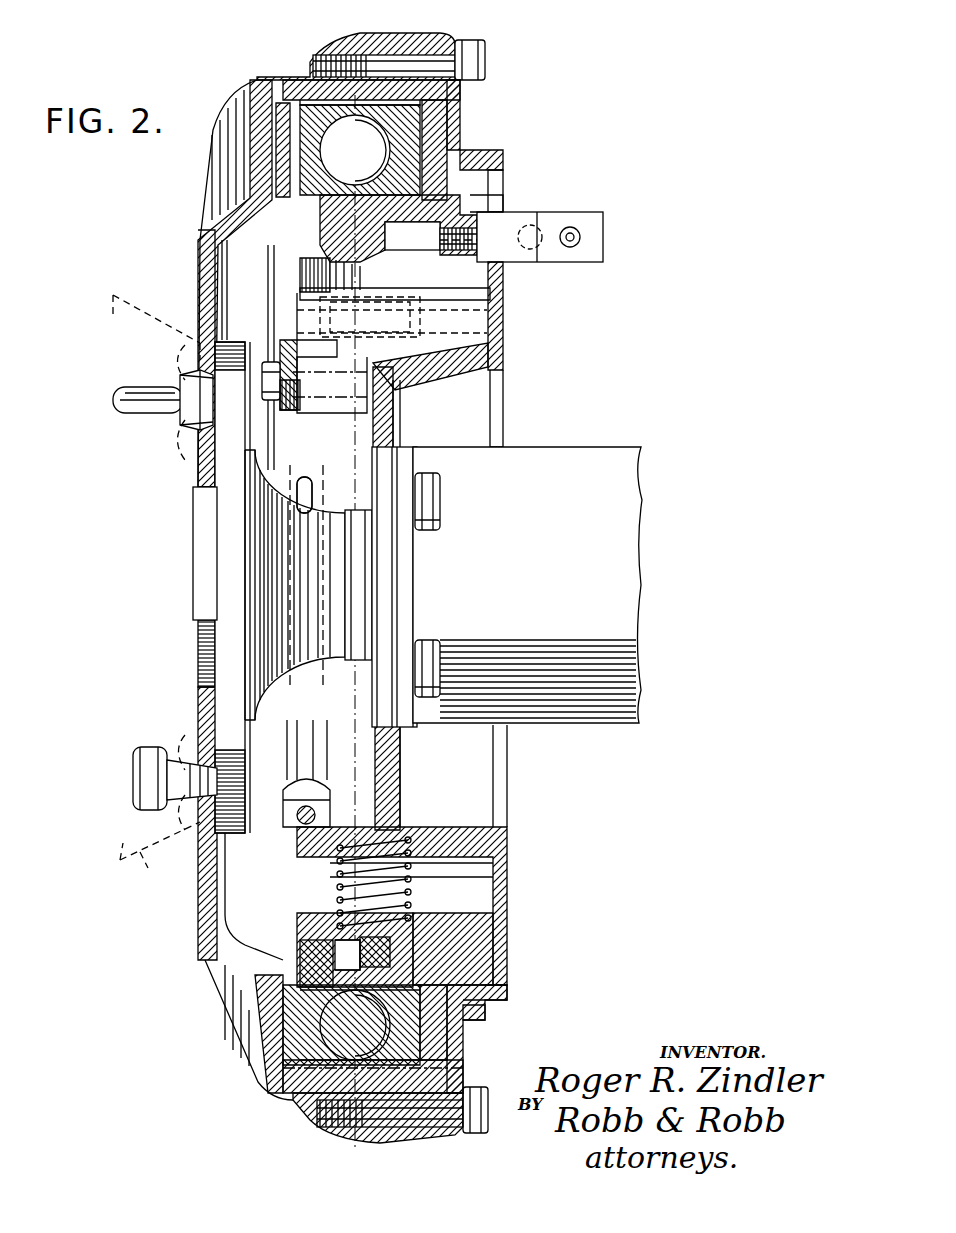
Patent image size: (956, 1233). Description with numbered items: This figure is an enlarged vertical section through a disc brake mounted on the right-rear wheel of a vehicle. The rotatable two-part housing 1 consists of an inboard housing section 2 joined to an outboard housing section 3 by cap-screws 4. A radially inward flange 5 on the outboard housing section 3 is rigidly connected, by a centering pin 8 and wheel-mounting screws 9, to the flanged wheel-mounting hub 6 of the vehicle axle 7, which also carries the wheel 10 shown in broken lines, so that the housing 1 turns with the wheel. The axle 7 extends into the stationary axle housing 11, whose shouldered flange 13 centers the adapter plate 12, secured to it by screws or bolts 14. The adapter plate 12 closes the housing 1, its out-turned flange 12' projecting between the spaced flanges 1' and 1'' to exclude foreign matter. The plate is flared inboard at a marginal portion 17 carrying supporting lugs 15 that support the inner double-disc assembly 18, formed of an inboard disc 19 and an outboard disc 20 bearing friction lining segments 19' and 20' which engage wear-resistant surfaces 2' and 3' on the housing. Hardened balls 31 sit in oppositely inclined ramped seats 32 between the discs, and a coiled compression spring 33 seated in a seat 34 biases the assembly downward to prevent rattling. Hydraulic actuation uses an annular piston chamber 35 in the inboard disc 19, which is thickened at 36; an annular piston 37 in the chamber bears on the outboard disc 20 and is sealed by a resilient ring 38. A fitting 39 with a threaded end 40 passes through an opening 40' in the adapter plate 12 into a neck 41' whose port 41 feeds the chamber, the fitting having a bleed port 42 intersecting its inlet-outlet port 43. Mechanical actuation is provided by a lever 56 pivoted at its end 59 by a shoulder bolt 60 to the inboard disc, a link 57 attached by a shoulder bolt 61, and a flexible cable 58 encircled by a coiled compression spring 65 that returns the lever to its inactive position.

The two-part housing 1 is at (362, 595).
The housing flange 1' is at (494, 1024).
The housing flange 1'' is at (512, 1013).
The inboard housing section 2 is at (481, 128).
The wear-resistant surface 2' is at (487, 154).
The outboard housing section 3 is at (330, 599).
The wear-resistant surface 3' is at (240, 150).
The cap-screw 4 is at (485, 62).
The flange 5 is at (200, 478).
The flanged wheel-mounting hub 6 is at (235, 548).
The vehicle axle 7 is at (330, 660).
The centering pin 8 is at (140, 405).
The wheel-mounting screw 9 is at (150, 748).
The wheel 10 is at (160, 820).
The axle housing 11 is at (535, 715).
The adapter plate 12 is at (440, 598).
The out-turned flange 12' is at (516, 572).
The shouldered flange 13 is at (410, 560).
The screws or bolts 14 is at (440, 507).
The supporting lug 15 is at (313, 277).
The marginally flared portion 17 is at (503, 373).
The inner double-disc assembly 18 is at (325, 108).
The inboard disc 19 is at (471, 1025).
The friction lining segment 19' is at (485, 574).
The outboard disc 20 is at (307, 1041).
The friction lining segment 20' is at (290, 568).
The hardened ball 31 is at (355, 587).
The ramped seat 32 is at (330, 1035).
The coiled compression spring 33 is at (410, 903).
The seat 34 is at (420, 835).
The annular piston chamber 35 is at (455, 968).
The laterally thickened portion 36 is at (340, 950).
The annular piston 37 is at (330, 970).
The sealing gasket or ring 38 is at (400, 940).
The fitting 39 is at (520, 215).
The threaded end 40 is at (505, 257).
The opening 40' is at (501, 276).
The port 41 is at (412, 236).
The neck 41' is at (395, 295).
The port 42 is at (582, 232).
The inlet-outlet port 43 is at (505, 232).
The lever 56 is at (318, 462).
The link 57 is at (300, 400).
The pull-wire or cable 58 is at (330, 800).
The lever end 59 is at (392, 317).
The shoulder bolt 60 is at (330, 312).
The shoulder bolt 61 is at (268, 362).
The coiled compression spring 65 is at (298, 820).